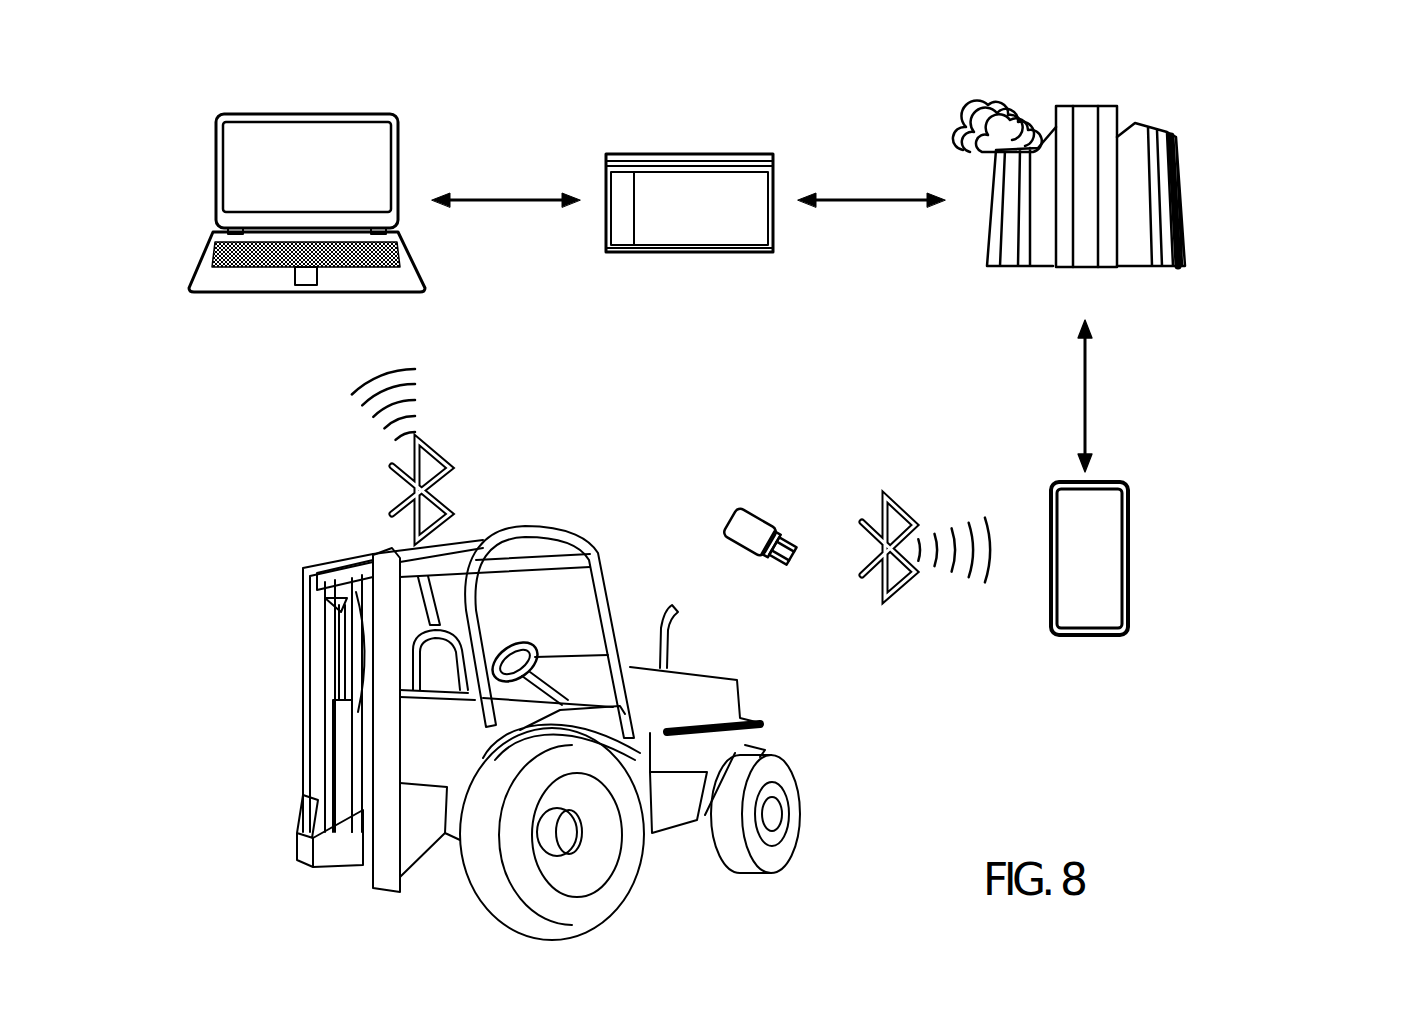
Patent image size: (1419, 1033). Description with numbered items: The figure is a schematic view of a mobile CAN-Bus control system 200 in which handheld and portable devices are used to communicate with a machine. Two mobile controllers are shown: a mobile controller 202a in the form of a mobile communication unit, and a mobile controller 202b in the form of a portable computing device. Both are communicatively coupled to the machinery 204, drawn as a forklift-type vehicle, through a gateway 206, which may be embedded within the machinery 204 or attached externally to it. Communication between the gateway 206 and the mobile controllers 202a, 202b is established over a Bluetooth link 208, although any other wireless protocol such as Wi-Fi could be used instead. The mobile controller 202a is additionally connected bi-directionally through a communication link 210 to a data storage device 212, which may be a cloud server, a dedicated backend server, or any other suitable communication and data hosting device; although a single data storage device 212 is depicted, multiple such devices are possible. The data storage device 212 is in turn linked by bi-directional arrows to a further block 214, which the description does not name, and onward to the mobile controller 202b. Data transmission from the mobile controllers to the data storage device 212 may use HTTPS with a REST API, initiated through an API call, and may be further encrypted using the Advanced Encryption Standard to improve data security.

The mobile CAN-Bus control system 200 is at (1280, 70).
The mobile controller 202a is at (1154, 581).
The mobile controller 202b is at (158, 188).
The machinery 204 is at (276, 687).
The gateway 206 is at (779, 500).
The Bluetooth link 208 is at (480, 451).
The communication link 210 is at (1111, 434).
The data storage device 212 is at (1201, 223).
The database 214 is at (707, 127).